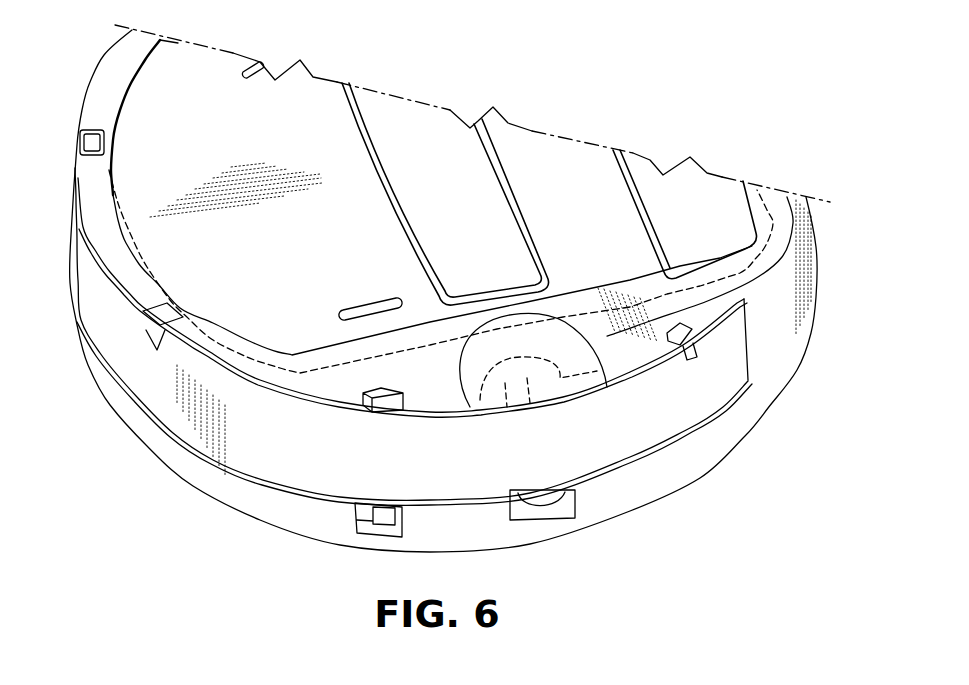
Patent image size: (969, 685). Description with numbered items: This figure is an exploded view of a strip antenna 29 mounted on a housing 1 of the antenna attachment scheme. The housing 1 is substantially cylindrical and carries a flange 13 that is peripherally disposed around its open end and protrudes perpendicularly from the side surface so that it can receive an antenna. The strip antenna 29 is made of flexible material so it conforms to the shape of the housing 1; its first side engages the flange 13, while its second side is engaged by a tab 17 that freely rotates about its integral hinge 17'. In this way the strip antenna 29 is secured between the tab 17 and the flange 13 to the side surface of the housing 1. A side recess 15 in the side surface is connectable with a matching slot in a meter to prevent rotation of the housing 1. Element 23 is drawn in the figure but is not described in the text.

The housing 1 is at (814, 236).
The flange 13 is at (797, 317).
The side recess 15 is at (383, 393).
The tab 17 is at (442, 364).
The integral hinge 17' is at (395, 363).
The bumper 23 is at (727, 420).
The strip antenna 29 is at (625, 426).